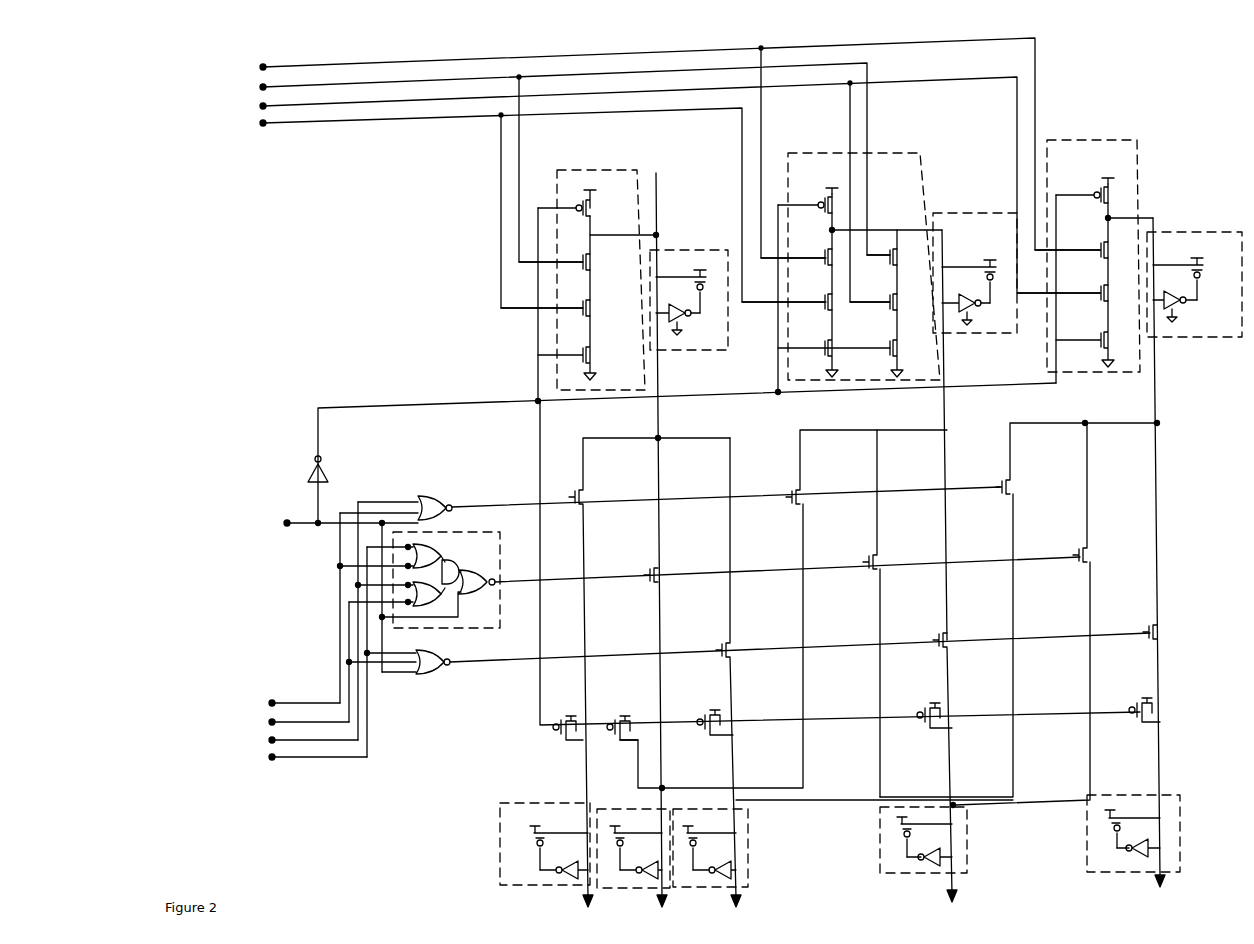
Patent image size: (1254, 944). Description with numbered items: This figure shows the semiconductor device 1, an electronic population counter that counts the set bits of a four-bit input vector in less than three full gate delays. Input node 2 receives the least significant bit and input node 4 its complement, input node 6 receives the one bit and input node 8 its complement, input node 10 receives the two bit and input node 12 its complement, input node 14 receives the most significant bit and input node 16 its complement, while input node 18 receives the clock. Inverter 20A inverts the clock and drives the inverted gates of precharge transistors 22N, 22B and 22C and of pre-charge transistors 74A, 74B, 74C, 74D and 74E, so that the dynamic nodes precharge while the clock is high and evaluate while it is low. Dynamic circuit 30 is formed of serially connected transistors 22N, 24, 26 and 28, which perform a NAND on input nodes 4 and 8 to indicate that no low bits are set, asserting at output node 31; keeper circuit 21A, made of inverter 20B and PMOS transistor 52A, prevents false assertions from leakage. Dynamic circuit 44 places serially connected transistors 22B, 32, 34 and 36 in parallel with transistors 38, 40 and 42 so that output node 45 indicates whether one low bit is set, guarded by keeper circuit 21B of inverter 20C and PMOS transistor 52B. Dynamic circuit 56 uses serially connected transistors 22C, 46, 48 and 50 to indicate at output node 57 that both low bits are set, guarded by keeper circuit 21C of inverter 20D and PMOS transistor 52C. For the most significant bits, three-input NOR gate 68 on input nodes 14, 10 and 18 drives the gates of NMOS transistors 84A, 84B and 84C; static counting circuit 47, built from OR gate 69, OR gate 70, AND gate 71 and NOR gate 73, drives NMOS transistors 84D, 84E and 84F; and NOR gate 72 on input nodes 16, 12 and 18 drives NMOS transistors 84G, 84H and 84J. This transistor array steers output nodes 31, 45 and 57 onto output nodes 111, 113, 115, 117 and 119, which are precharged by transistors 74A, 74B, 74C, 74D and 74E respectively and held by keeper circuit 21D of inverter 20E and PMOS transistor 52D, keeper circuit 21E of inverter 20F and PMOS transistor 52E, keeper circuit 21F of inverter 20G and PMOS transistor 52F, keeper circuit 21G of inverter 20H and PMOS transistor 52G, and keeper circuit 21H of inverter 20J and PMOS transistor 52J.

The semiconductor device 1 is at (260, 284).
The input node 2 is at (257, 67).
The input node 4 is at (257, 87).
The input node 6 is at (257, 106).
The input node 8 is at (257, 123).
The input node 10 is at (265, 703).
The input node 12 is at (265, 722).
The input node 14 is at (265, 740).
The input node 16 is at (265, 757).
The input node 18 is at (278, 523).
The inverter 20A is at (330, 474).
The inverter 20B is at (678, 323).
The inverter 20C is at (966, 313).
The inverter 20D is at (1176, 311).
The inverter 20E is at (564, 859).
The inverter 20F is at (641, 859).
The inverter 20G is at (714, 859).
The inverter 20H is at (929, 847).
The inverter 20J is at (1135, 862).
The keeper circuit 21A is at (672, 245).
The keeper circuit 21B is at (982, 210).
The keeper circuit 21C is at (1195, 232).
The keeper circuit 21D is at (512, 885).
The keeper circuit 21E is at (622, 888).
The keeper circuit 21F is at (760, 863).
The keeper circuit 21G is at (968, 856).
The keeper circuit 21H is at (1182, 843).
The precharge transistor 22N is at (596, 208).
The precharge transistor 22B is at (826, 196).
The precharge transistor 22C is at (1100, 190).
The NMOS transistor 24 is at (597, 262).
The NMOS transistor 26 is at (597, 308).
The NMOS transistor 28 is at (597, 355).
The dynamic circuit 30 is at (602, 170).
The output node 31 is at (657, 528).
The NMOS transistor 32 is at (808, 257).
The NMOS transistor 34 is at (830, 304).
The NMOS transistor 36 is at (837, 346).
The NMOS transistor 38 is at (895, 255).
The NMOS transistor 40 is at (886, 302).
The NMOS transistor 42 is at (907, 303).
The dynamic circuit 44 is at (893, 153).
The output node 45 is at (942, 230).
The NMOS transistor 46 is at (1085, 250).
The static counting circuit 47 is at (497, 532).
The NMOS transistor 48 is at (1076, 293).
The NMOS transistor 50 is at (1095, 275).
The PMOS transistor 52A is at (681, 282).
The PMOS transistor 52B is at (969, 265).
The PMOS transistor 52C is at (1202, 274).
The PMOS transistor 52D is at (556, 838).
The PMOS transistor 52E is at (632, 840).
The PMOS transistor 52F is at (706, 840).
The PMOS transistor 52G is at (905, 805).
The PMOS transistor 52J is at (1118, 805).
The dynamic circuit 56 is at (1100, 140).
The output node 57 is at (1153, 218).
The NOR gate 68 is at (432, 494).
The OR gate 69 is at (402, 552).
The OR gate 70 is at (401, 598).
The AND gate 71 is at (460, 562).
The NOR gate 72 is at (427, 678).
The NOR gate 73 is at (474, 598).
The pre-charge PMOS transistor 74A is at (556, 712).
The pre-charge PMOS transistor 74B is at (606, 712).
The pre-charge PMOS transistor 74C is at (696, 708).
The pre-charge PMOS transistor 74D is at (922, 708).
The pre-charge PMOS transistor 74E is at (1135, 705).
The NMOS transistor 84A is at (590, 492).
The NMOS transistor 84B is at (806, 488).
The NMOS transistor 84C is at (1016, 476).
The NMOS transistor 84D is at (666, 562).
The NMOS transistor 84E is at (883, 560).
The NMOS transistor 84F is at (1092, 552).
The NMOS transistor 84G is at (738, 642).
The NMOS transistor 84H is at (954, 634).
The NMOS transistor 84J is at (1166, 628).
The output node 111 is at (578, 902).
The output node 113 is at (668, 905).
The output node 115 is at (745, 903).
The output node 117 is at (962, 893).
The output node 119 is at (1168, 883).